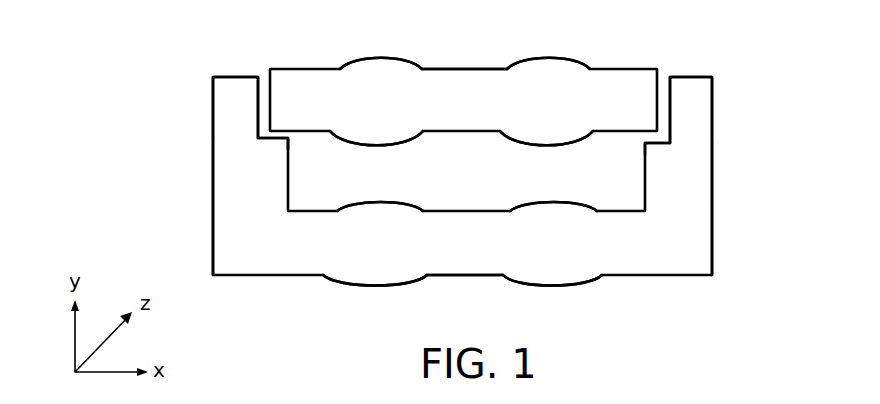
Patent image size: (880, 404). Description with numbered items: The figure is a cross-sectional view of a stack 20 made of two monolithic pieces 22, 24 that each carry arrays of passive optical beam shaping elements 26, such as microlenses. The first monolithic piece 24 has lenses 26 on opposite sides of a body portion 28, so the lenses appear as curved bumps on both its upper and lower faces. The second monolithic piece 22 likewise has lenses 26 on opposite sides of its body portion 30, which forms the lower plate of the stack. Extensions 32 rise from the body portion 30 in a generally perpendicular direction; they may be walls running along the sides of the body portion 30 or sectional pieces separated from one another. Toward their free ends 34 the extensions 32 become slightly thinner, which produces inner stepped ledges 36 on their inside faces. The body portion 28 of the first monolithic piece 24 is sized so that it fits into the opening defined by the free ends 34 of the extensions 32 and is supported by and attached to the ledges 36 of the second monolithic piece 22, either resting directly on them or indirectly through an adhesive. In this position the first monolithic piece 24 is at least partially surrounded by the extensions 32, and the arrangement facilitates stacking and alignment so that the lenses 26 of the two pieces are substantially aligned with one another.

The stack 20 is at (117, 117).
The second monolithic piece 22 is at (497, 249).
The first monolithic piece 24 is at (457, 115).
The beam shaping elements 26 is at (387, 57).
The body portion 28 is at (488, 93).
The body portion 30 is at (463, 260).
The extensions 32 is at (220, 201).
The free ends 34 is at (230, 77).
The inner stepped ledges 36 is at (272, 137).